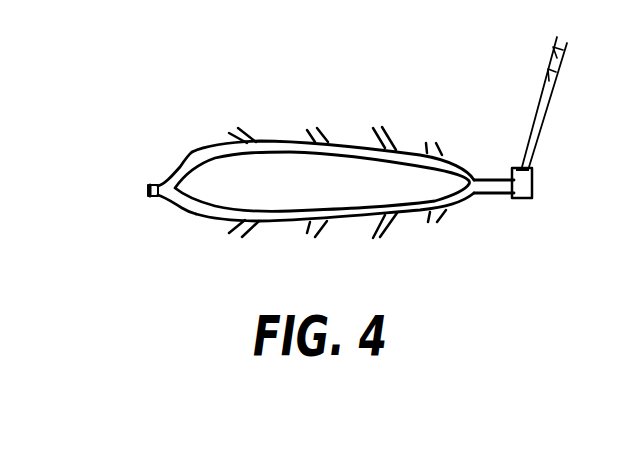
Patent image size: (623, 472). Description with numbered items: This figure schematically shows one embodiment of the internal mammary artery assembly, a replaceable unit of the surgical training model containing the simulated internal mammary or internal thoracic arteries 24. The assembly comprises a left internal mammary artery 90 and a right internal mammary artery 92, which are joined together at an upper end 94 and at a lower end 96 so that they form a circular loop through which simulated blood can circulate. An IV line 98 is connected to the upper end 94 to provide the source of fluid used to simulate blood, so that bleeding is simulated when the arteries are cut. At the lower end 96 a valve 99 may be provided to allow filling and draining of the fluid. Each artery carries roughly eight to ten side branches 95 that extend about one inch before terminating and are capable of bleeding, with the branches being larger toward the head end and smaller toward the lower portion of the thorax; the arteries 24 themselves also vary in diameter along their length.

The internal mammary arteries 24 is at (416, 142).
The left internal mammary artery 90 is at (285, 222).
The right internal mammary artery 92 is at (280, 147).
The upper end 94 is at (489, 179).
The side branches 95 is at (384, 141).
The lower end 96 is at (148, 190).
The IV line 98 is at (542, 98).
The valve 99 is at (160, 188).